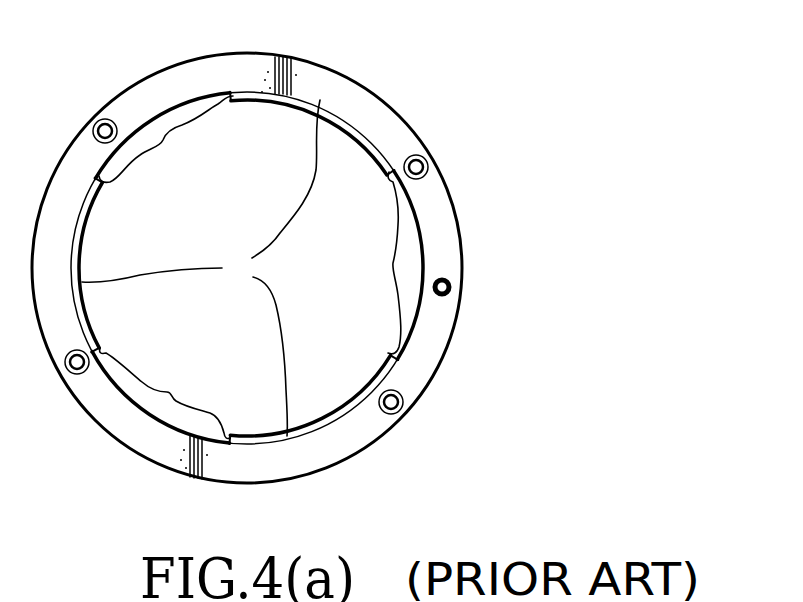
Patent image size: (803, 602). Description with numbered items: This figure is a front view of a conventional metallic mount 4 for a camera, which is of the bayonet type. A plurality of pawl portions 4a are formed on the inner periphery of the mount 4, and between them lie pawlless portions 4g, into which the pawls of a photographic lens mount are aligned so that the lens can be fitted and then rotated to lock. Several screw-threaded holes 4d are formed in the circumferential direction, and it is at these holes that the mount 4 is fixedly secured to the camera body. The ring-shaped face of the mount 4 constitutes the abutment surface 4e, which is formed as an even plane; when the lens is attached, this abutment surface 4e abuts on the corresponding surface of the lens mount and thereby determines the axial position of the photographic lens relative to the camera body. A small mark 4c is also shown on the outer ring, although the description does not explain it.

The mount for camera 4 is at (355, 82).
The pawl portions 4a is at (201, 268).
The index mark 4c is at (451, 288).
The screw-threaded holes 4d is at (96, 120).
The abutment surface 4e is at (222, 62).
The pawlless portions 4g is at (250, 267).